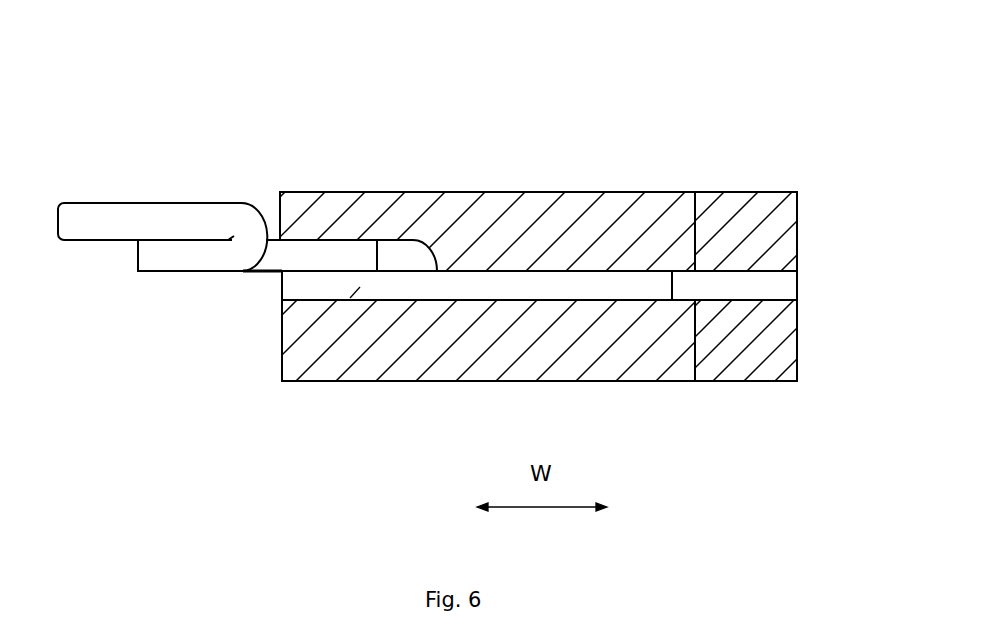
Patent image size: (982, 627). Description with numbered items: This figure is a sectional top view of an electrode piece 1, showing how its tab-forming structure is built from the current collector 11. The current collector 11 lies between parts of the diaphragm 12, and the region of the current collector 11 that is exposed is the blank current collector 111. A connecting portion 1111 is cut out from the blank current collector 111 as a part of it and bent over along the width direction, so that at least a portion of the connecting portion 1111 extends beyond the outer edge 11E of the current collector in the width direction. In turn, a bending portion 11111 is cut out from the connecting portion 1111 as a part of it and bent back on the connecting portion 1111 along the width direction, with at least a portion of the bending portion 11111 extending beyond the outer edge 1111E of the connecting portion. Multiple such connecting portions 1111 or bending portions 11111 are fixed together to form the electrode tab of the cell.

The electrode piece 1 is at (418, 68).
The current collector 11 is at (785, 288).
The blank current collector 111 is at (282, 373).
The outer edge of current collector 11E is at (280, 287).
The diaphragm 12 is at (655, 203).
The connecting portion 1111 is at (222, 204).
The bending portion 11111 is at (105, 220).
The outer edge of connecting portion 1111E is at (140, 268).